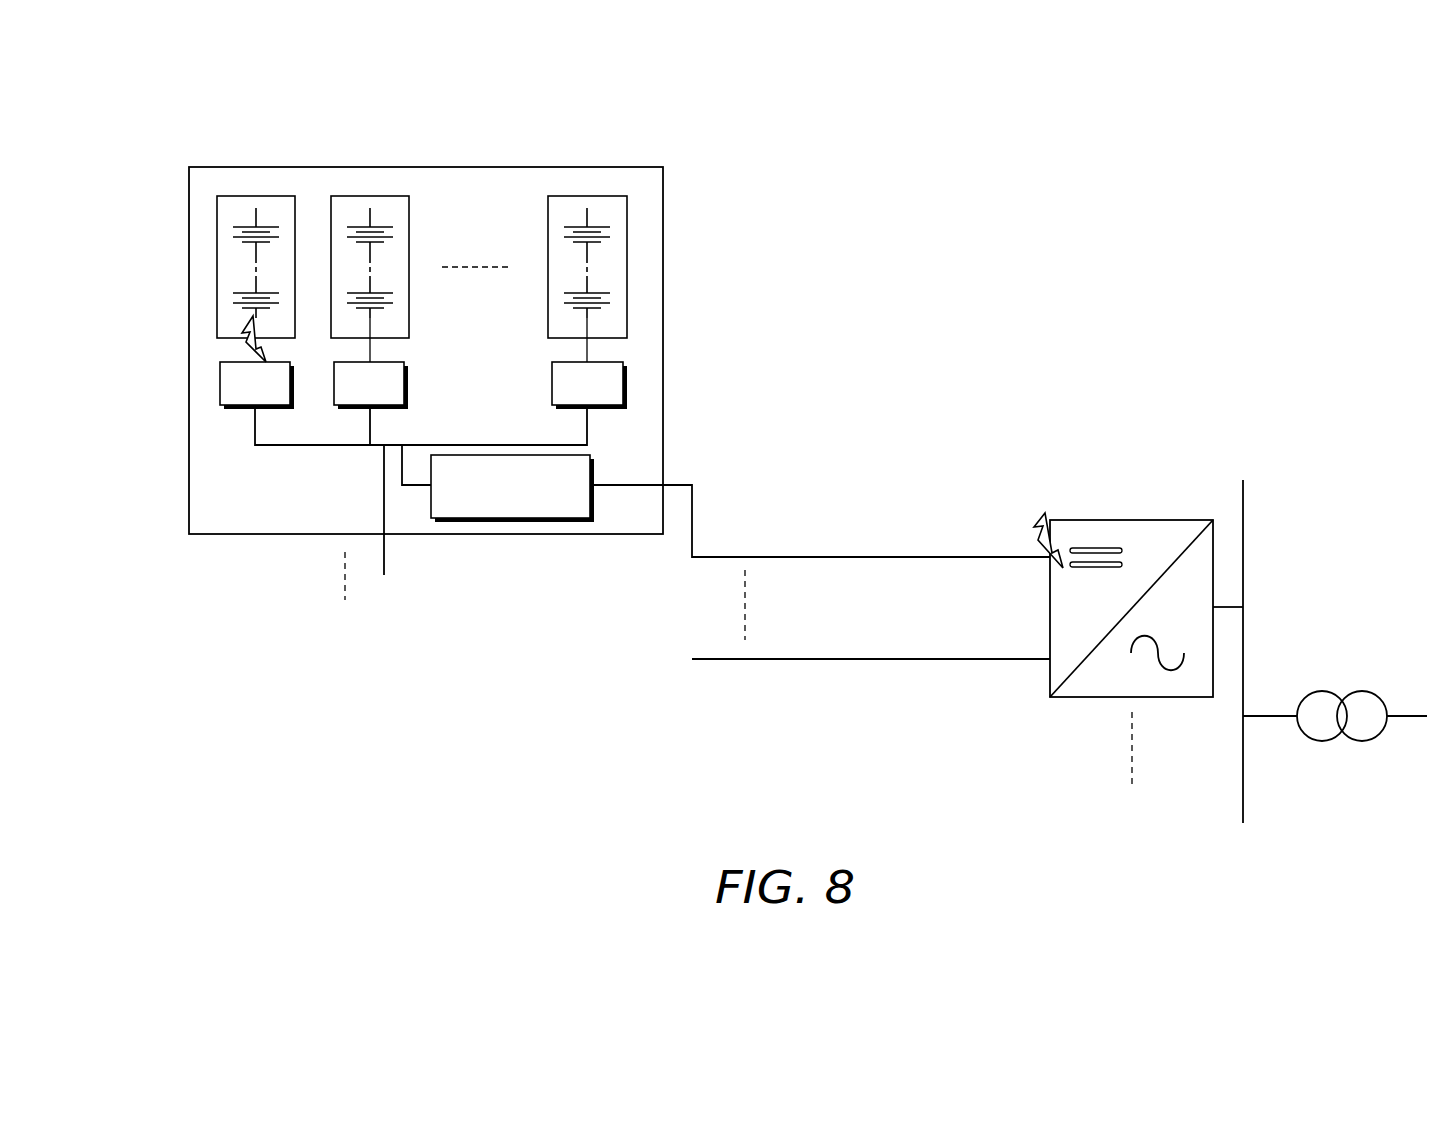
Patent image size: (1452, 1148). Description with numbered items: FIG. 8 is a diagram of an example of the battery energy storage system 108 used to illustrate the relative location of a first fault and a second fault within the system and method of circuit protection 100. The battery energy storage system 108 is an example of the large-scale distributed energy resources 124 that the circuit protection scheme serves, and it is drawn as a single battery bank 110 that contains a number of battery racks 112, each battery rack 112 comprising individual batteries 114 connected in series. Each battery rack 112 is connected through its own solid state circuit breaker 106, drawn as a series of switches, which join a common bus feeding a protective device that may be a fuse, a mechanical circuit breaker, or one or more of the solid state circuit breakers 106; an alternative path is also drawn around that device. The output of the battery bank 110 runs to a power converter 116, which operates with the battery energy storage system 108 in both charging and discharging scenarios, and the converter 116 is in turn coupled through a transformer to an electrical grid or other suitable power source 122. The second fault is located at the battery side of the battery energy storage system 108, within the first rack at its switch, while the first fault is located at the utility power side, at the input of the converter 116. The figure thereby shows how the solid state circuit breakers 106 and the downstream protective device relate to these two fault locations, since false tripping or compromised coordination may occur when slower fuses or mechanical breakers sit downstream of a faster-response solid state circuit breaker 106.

The system and method of circuit protection 100 is at (1360, 166).
The solid state circuit breaker 106 is at (221, 379).
The battery energy storage system 108 is at (711, 721).
The battery bank 110 is at (328, 512).
The battery rack 112 is at (378, 209).
The individual battery 114 is at (387, 231).
The power converter 116 is at (1092, 535).
The electrical grid or power source 122 is at (1363, 691).
The large-scale distributed energy resources 124 is at (783, 368).